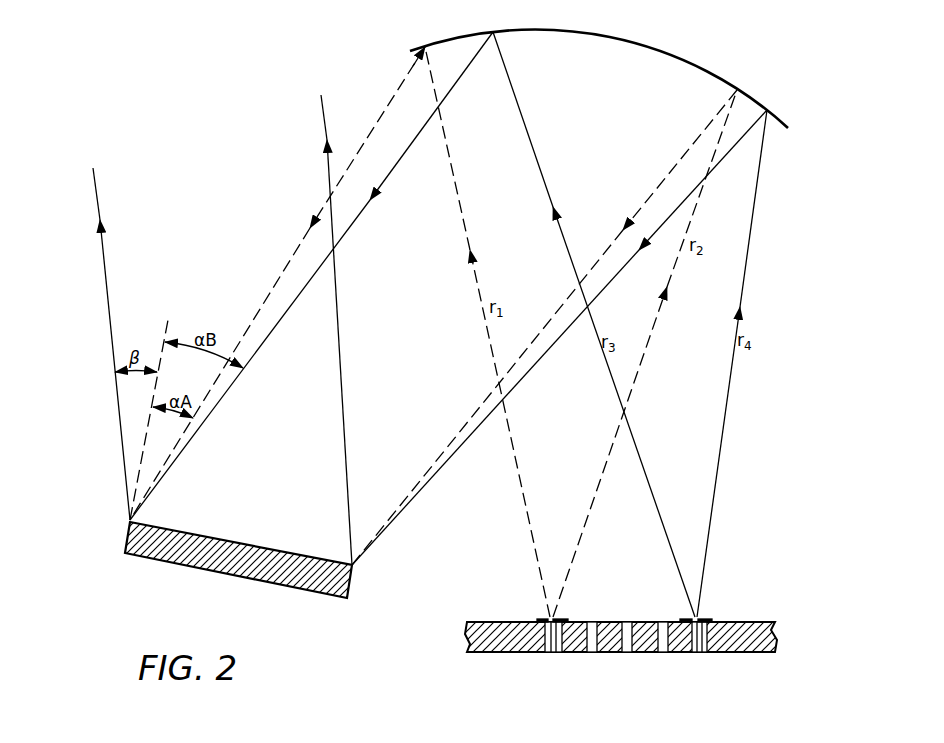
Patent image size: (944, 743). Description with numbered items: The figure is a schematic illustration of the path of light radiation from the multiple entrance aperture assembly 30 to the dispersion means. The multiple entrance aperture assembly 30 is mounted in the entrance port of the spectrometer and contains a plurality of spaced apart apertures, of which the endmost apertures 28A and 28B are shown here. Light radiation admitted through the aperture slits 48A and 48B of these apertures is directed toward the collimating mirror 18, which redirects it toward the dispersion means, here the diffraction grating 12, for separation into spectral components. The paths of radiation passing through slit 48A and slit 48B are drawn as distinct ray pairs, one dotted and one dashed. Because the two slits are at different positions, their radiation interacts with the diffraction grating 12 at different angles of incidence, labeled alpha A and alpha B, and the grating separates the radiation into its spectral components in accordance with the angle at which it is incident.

The collimating mirror 18 is at (688, 54).
The diffraction grating 12 is at (152, 562).
The multiple entrance aperture assembly 30 is at (772, 638).
The endmost aperture 28A is at (552, 654).
The endmost aperture 28B is at (698, 654).
The aperture slit 48A is at (550, 614).
The aperture slit 48B is at (698, 614).